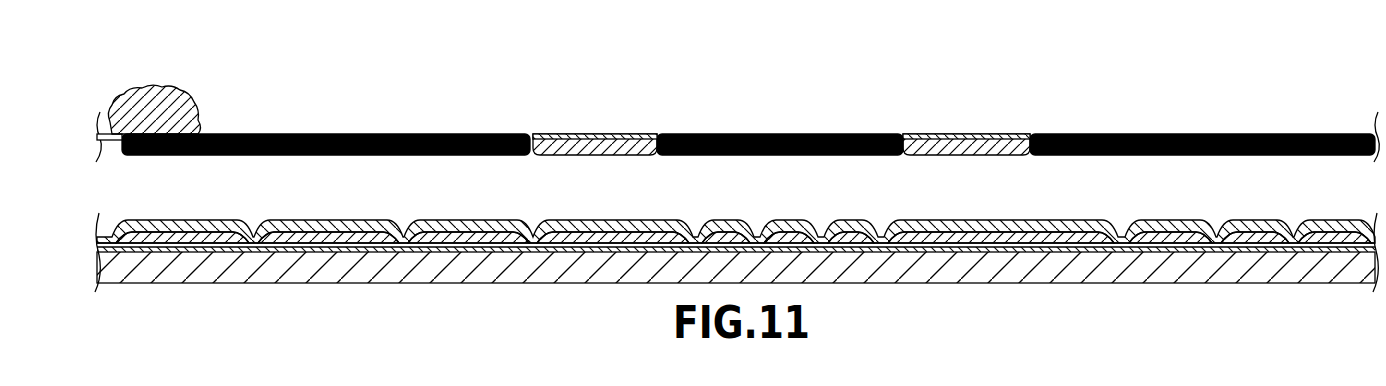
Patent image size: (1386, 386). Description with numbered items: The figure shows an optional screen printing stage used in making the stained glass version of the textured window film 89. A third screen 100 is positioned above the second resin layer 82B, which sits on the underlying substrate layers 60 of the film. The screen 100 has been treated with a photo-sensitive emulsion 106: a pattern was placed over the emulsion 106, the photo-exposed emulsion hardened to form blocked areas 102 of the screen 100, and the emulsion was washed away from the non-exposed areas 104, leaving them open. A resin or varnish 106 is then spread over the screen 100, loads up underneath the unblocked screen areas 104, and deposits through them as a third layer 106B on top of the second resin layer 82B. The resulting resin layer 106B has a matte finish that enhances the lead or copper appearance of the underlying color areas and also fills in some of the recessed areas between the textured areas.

The textured window film 89 is at (252, 58).
The substrate 60 is at (232, 284).
The second resin layer 82B is at (185, 221).
The third screen 100 is at (932, 134).
The blocked areas 102 is at (320, 133).
The non-exposed areas 104 is at (600, 133).
The emulsion 106 is at (152, 86).
The third resin layer 106B is at (578, 221).